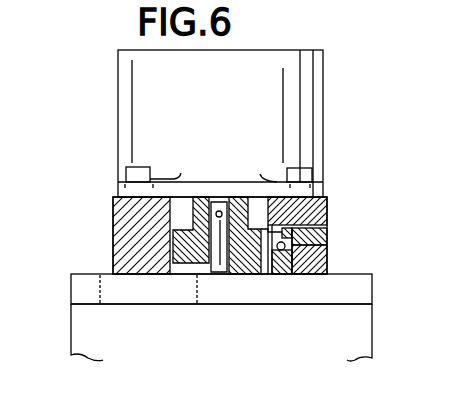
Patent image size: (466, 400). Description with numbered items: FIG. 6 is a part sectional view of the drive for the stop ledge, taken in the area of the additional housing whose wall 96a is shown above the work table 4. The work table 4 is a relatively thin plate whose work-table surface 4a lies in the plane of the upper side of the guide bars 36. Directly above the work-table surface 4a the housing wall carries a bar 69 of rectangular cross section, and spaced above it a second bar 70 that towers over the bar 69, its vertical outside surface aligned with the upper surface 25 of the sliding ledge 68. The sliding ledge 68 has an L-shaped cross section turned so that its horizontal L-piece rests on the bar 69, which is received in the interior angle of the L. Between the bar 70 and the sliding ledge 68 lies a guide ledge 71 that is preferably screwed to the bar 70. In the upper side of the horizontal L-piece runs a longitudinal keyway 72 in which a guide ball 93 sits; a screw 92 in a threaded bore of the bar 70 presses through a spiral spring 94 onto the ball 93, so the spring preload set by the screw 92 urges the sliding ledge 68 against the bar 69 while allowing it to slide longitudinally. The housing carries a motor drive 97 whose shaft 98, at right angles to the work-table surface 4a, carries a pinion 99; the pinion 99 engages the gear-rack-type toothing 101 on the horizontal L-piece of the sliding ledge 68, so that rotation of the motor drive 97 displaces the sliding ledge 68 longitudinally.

The work table 4 is at (73, 297).
The work-table surface 4a is at (92, 273).
The guide bars 36 is at (363, 294).
The motor drive 97 is at (308, 118).
The wall of housing 96a is at (113, 227).
The pinion 99 is at (190, 252).
The shaft 98 is at (215, 274).
The gear-rack-type toothing 101 is at (265, 272).
The second bar 70 is at (262, 222).
The spiral spring 94 is at (325, 204).
The screw 92 is at (276, 228).
The guide ledge 71 is at (327, 229).
The upper surface 25 is at (285, 259).
The guide ball 93 is at (327, 263).
The longitudinal keyway 72 is at (273, 274).
The sliding ledge 68 is at (313, 276).
The bar 69 is at (289, 276).